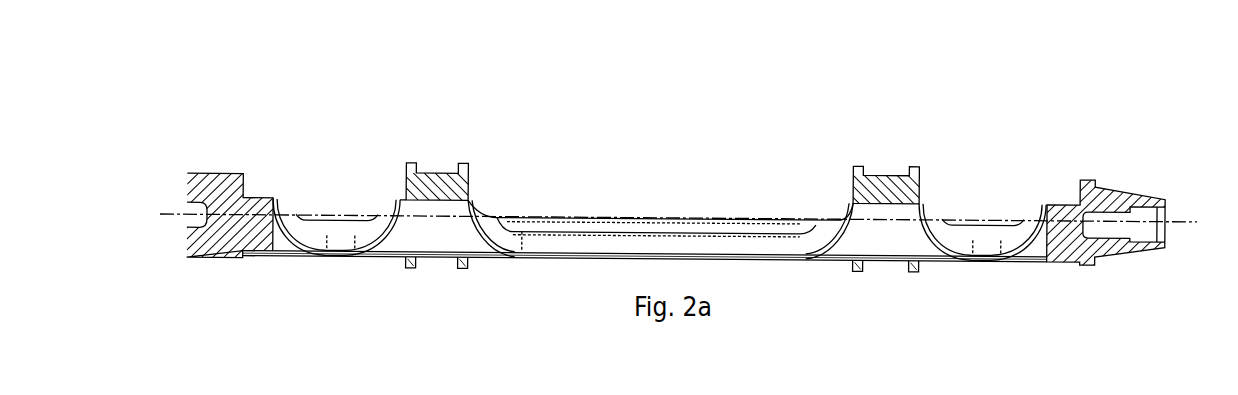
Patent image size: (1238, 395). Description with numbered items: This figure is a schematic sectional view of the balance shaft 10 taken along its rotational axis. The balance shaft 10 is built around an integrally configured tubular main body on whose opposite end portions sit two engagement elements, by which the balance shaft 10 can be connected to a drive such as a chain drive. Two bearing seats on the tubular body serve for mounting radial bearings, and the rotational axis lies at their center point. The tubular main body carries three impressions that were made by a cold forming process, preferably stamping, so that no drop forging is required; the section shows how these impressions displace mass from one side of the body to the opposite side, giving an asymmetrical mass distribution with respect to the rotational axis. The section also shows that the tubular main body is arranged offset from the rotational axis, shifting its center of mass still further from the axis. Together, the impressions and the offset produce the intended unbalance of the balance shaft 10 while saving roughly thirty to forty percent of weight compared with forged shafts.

The balance shaft 10 is at (299, 97).